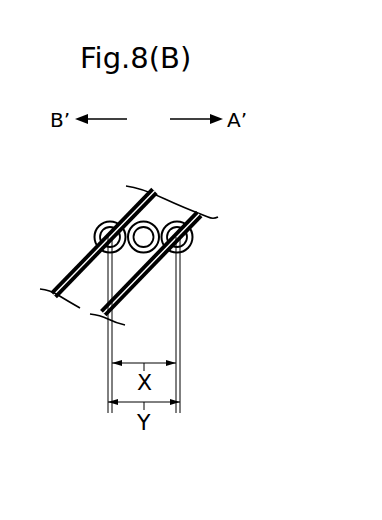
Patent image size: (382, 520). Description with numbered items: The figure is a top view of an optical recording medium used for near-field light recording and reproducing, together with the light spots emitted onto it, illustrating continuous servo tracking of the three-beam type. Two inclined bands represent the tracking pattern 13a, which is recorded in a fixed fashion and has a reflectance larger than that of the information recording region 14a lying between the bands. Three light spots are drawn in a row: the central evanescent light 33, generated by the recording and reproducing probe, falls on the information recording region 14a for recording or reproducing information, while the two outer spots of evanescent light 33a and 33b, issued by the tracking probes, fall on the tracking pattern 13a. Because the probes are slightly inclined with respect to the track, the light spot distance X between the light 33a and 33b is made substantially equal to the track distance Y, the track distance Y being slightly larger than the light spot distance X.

The tracking pattern 13a is at (132, 203).
The information recording region 14a is at (170, 212).
The evanescent light 33 is at (123, 220).
The evanescent light for tracking 33a is at (102, 230).
The evanescent light for tracking 33b is at (189, 250).